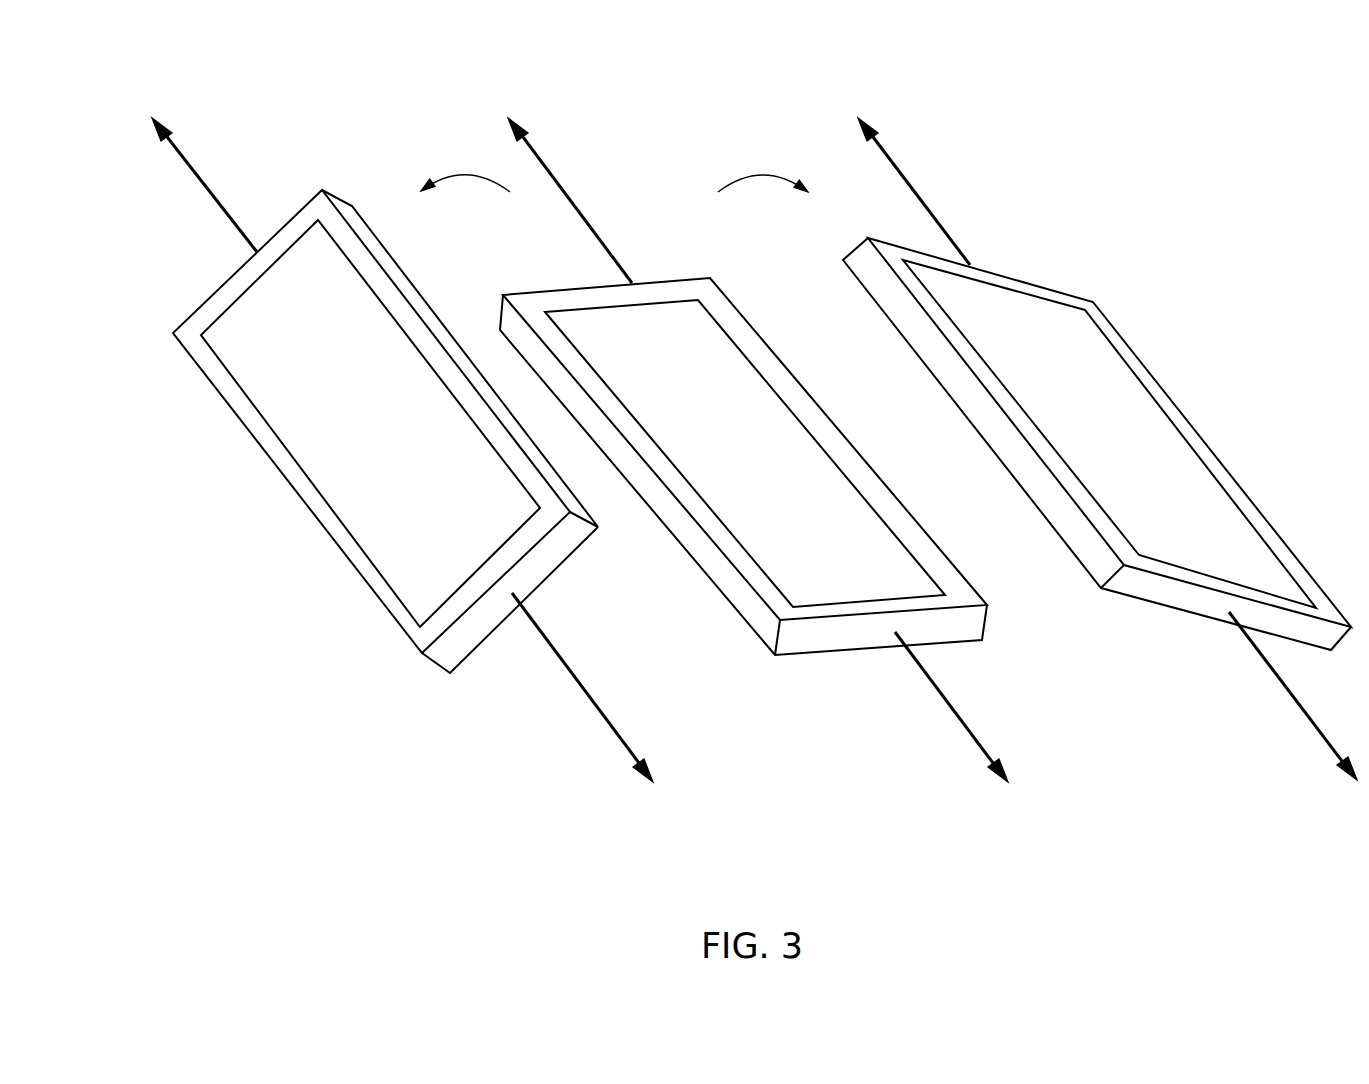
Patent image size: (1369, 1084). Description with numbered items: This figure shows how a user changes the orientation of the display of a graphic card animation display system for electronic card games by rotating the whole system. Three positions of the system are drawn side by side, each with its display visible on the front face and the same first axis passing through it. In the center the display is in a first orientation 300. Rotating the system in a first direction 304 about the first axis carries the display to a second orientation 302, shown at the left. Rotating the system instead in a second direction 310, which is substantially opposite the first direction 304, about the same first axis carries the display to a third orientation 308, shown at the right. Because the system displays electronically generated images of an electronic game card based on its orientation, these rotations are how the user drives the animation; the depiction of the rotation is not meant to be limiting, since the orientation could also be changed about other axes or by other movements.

The first orientation 300 is at (923, 707).
The second orientation 302 is at (565, 687).
The first direction 304 is at (469, 212).
The third orientation 308 is at (1269, 697).
The second direction 310 is at (768, 212).